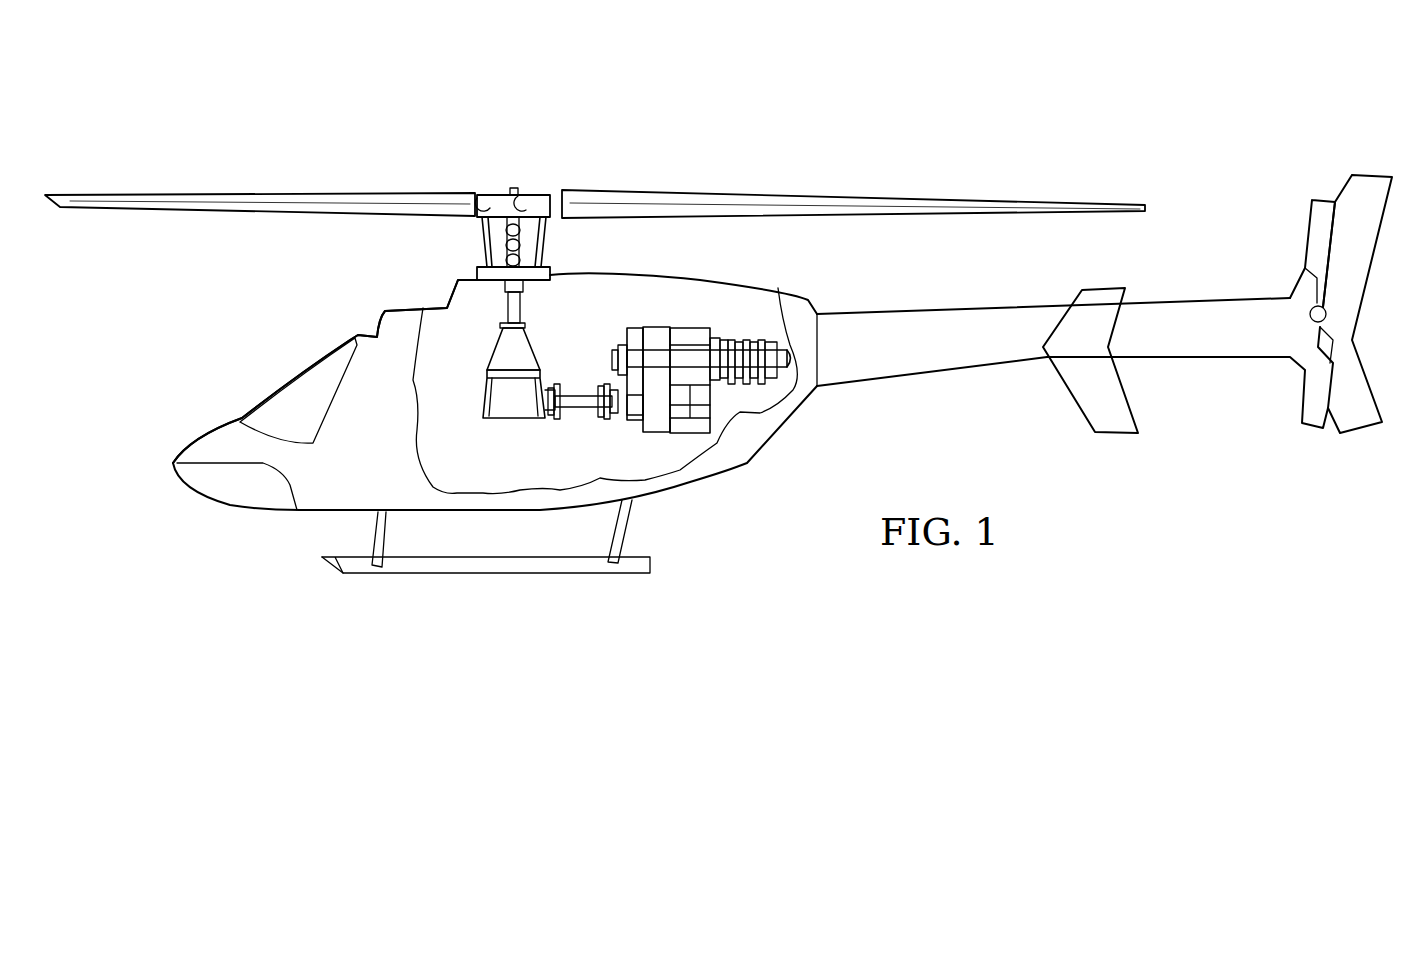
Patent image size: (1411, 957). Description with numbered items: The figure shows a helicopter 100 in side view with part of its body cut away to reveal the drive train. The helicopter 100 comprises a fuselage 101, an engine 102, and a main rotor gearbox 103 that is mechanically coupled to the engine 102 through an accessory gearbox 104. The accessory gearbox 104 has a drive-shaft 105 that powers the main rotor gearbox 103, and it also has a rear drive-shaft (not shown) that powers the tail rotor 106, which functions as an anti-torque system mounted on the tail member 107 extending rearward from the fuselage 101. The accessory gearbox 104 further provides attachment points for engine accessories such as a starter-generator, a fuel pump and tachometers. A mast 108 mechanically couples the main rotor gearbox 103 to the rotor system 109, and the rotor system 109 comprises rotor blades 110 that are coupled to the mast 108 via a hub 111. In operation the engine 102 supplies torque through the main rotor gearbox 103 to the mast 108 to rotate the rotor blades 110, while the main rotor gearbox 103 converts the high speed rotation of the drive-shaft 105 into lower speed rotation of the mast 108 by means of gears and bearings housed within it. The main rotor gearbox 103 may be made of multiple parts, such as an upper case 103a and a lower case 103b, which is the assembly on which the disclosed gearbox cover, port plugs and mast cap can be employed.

The helicopter 100 is at (826, 110).
The fuselage 101 is at (744, 467).
The engine 102 is at (725, 336).
The main rotor gearbox 103 is at (560, 358).
The upper case 103a is at (498, 420).
The lower case 103b is at (490, 362).
The accessory gearbox 104 is at (657, 421).
The drive-shaft 105 is at (588, 412).
The tail rotor 106 is at (1311, 218).
The tail member 107 is at (950, 378).
The mast 108 is at (522, 313).
The rotor system 109 is at (553, 234).
The rotor blades 110 is at (215, 196).
The hub 111 is at (500, 197).